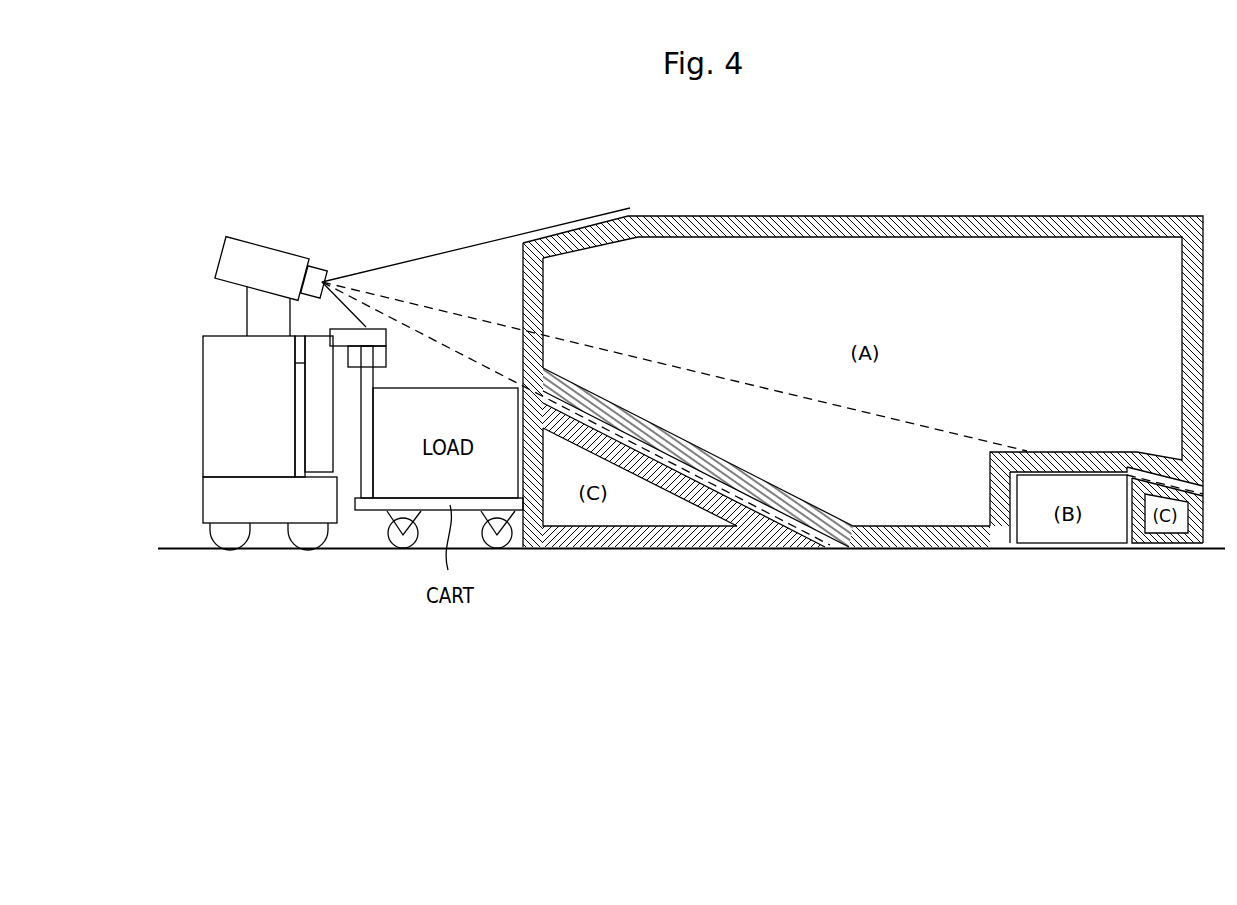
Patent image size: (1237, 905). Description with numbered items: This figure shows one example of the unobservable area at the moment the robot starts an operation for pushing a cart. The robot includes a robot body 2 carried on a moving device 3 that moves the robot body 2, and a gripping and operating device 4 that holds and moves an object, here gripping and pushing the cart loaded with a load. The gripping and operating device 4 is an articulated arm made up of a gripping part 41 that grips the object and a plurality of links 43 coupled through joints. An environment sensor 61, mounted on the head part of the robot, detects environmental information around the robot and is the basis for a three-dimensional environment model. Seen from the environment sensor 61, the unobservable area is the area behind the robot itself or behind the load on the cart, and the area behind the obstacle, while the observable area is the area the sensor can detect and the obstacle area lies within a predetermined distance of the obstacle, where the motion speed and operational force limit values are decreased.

The robot body 2 is at (222, 352).
The moving device 3 is at (218, 502).
The gripping and operating device 4 is at (231, 406).
The gripping part 41 is at (372, 336).
The links 43 is at (318, 448).
The environment sensor 61 is at (323, 268).